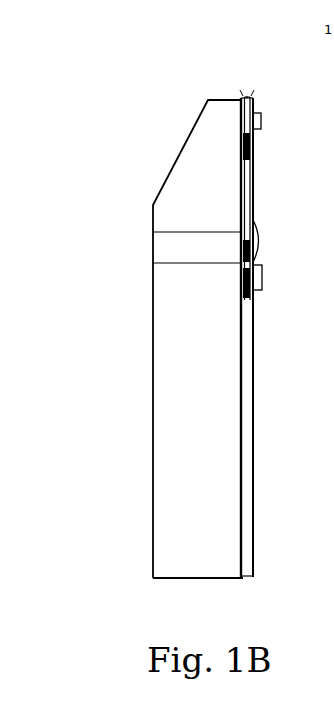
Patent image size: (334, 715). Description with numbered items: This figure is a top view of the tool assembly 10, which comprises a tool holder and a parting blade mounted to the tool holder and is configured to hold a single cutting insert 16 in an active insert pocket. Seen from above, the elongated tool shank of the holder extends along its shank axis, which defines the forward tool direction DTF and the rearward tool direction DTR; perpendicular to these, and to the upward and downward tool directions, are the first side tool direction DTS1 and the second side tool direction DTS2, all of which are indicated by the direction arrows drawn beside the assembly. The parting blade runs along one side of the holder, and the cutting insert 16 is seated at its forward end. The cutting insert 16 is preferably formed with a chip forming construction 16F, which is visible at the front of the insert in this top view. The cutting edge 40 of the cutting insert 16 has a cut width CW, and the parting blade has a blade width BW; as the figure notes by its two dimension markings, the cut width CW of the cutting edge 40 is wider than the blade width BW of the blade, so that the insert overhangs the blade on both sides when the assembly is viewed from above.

The tool assembly 10 is at (172, 80).
The cutting insert 16 is at (261, 118).
The chip forming construction 16F is at (244, 96).
The cutting edge 40 is at (251, 96).
The cut width CW is at (276, 96).
The blade width BW is at (274, 152).
The forward tool direction DTF is at (88, 500).
The rearward tool direction DTR is at (88, 518).
The first side tool direction DTS1 is at (130, 509).
The second side tool direction DTS2 is at (80, 509).